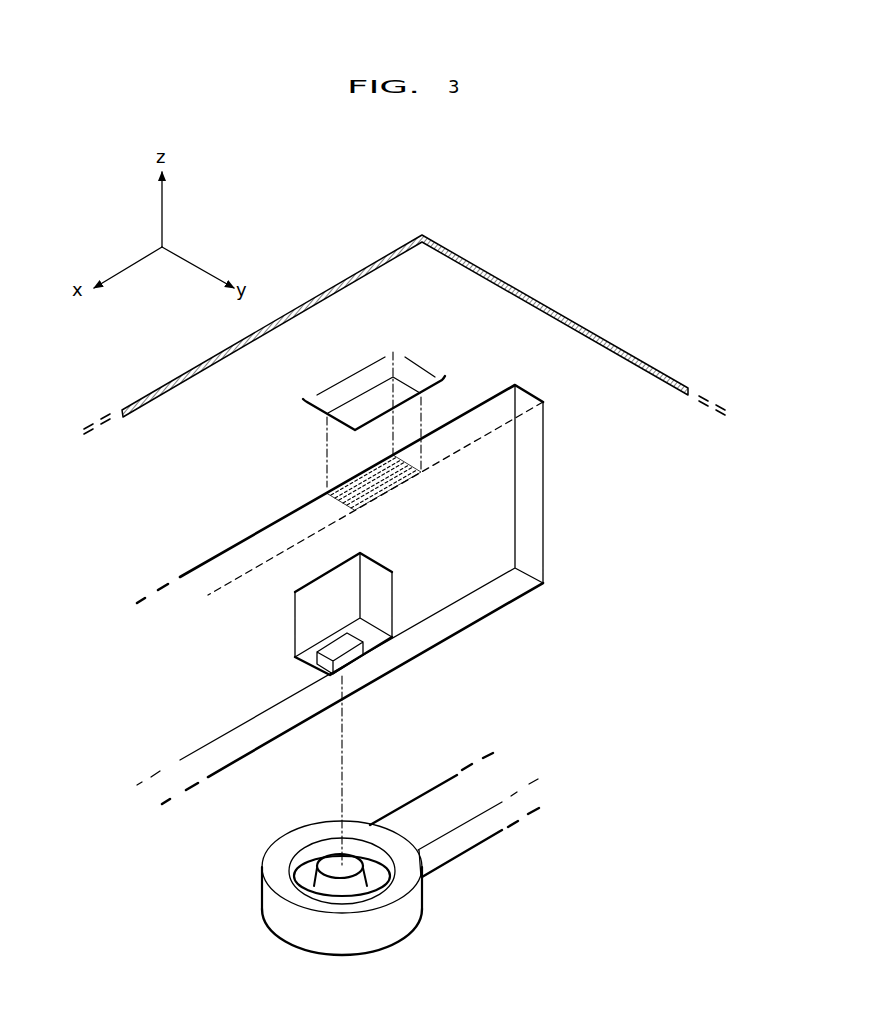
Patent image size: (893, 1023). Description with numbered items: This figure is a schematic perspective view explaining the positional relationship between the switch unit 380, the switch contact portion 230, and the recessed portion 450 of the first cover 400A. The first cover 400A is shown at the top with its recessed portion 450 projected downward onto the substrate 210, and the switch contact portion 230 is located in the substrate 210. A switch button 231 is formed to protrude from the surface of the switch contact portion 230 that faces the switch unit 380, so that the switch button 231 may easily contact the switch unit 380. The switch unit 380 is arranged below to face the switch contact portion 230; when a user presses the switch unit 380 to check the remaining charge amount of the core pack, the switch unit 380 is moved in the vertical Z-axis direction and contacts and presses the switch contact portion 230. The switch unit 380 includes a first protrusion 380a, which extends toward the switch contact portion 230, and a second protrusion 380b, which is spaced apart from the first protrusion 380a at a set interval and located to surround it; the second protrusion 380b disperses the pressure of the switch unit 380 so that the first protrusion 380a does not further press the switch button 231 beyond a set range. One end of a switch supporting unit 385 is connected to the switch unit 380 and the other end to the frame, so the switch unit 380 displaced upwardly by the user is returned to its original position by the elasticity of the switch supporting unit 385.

The first cover 400A is at (553, 335).
The recessed portion 450 is at (355, 388).
The substrate 210 is at (537, 528).
The switch contact portion 230 is at (380, 608).
The switch button 231 is at (353, 655).
The switch unit 380 is at (371, 877).
The first protrusion 380a is at (332, 863).
The second protrusion 380b is at (275, 870).
The switch supporting unit 385 is at (463, 842).